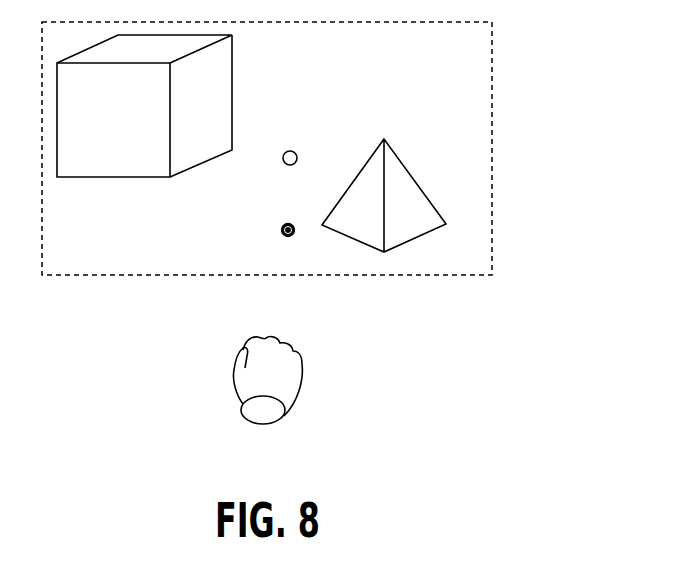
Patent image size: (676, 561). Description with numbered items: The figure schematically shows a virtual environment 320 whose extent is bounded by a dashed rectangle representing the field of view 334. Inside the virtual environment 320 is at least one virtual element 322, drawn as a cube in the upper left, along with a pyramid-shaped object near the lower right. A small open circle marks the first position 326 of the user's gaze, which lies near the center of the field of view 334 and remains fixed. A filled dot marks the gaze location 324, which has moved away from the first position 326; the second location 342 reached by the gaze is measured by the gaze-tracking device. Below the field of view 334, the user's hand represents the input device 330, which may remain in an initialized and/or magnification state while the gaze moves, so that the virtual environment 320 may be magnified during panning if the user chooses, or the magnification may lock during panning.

The virtual environment 320 is at (98, 262).
The virtual element 322 is at (213, 72).
The gaze location 324 is at (281, 230).
The first position of the user's gaze 326 is at (297, 153).
The input device 330 is at (303, 372).
The field of view 334 is at (492, 80).
The second location 342 is at (296, 232).